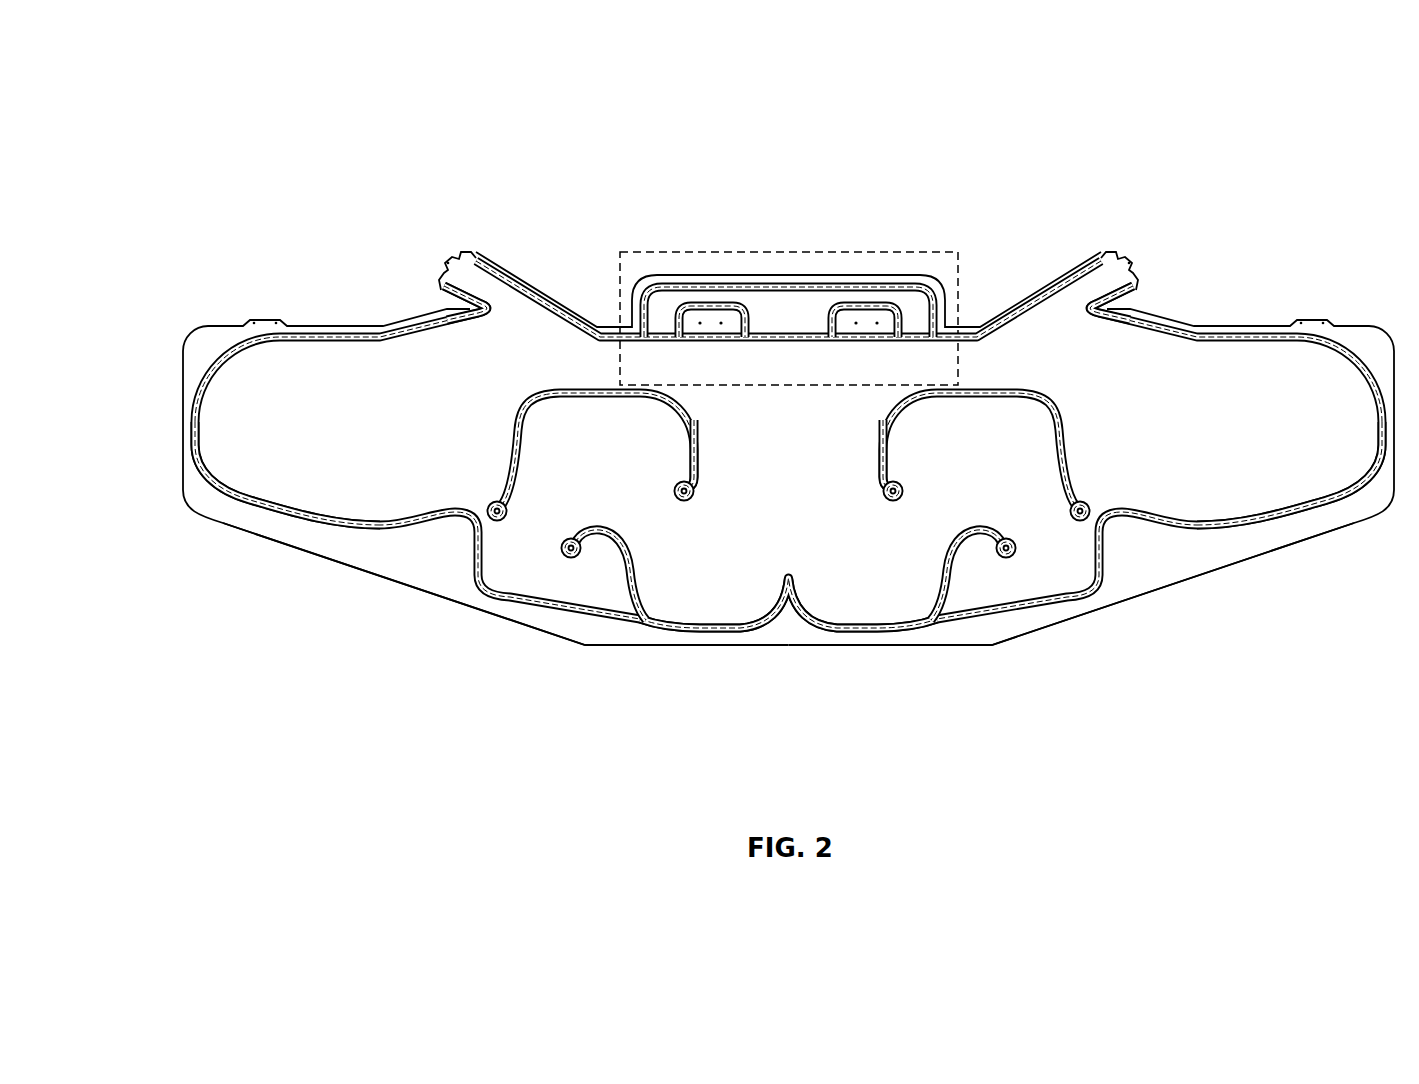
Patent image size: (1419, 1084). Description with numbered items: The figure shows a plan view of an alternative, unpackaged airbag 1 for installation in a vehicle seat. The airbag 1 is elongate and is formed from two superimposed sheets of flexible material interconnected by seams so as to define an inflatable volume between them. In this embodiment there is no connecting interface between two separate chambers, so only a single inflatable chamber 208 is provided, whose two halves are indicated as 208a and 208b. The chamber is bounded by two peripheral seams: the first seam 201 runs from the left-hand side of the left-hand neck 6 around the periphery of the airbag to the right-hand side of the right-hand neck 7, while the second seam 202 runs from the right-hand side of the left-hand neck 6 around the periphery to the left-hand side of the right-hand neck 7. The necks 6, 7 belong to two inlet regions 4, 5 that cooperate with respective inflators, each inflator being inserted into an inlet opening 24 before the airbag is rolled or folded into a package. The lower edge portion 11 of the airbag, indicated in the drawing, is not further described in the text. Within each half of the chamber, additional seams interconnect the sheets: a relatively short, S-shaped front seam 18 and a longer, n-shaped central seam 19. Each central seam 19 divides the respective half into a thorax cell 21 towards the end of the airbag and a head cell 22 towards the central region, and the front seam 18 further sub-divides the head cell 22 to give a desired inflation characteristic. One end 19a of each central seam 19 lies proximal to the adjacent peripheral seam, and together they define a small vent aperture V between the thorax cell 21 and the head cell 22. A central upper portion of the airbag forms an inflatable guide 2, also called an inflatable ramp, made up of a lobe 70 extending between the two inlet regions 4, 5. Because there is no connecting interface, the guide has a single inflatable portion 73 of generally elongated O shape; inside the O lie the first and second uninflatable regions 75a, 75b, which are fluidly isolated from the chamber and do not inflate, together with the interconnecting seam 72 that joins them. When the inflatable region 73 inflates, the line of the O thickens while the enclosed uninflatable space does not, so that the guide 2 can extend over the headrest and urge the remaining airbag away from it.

The airbag 1 is at (200, 228).
The inflatable guide 2 is at (625, 248).
The inlet region 4 is at (482, 247).
The inlet region 5 is at (1082, 247).
The neck 6 is at (445, 290).
The neck 7 is at (1130, 290).
The lower cover 11 is at (357, 550).
The front seam 18 is at (615, 531).
The central seam 19 is at (677, 405).
The end of central seam 19a is at (684, 498).
The thorax cell 21 is at (281, 476).
The head cell 22 is at (582, 448).
The inlet opening 24 is at (444, 262).
The lobe 70 is at (657, 279).
The interconnecting seam 72 is at (820, 335).
The inflatable portion of the guide 73 is at (784, 310).
The first uninflatable region 75a is at (709, 316).
The second uninflatable region 75b is at (878, 323).
The first peripheral seam 201 is at (193, 405).
The second peripheral seam 202 is at (580, 317).
The single inflatable chamber 208 is at (736, 488).
The half of the single inflatable chamber 208a is at (492, 457).
The half of the single inflatable chamber 208b is at (1086, 457).
The vent aperture V is at (489, 505).